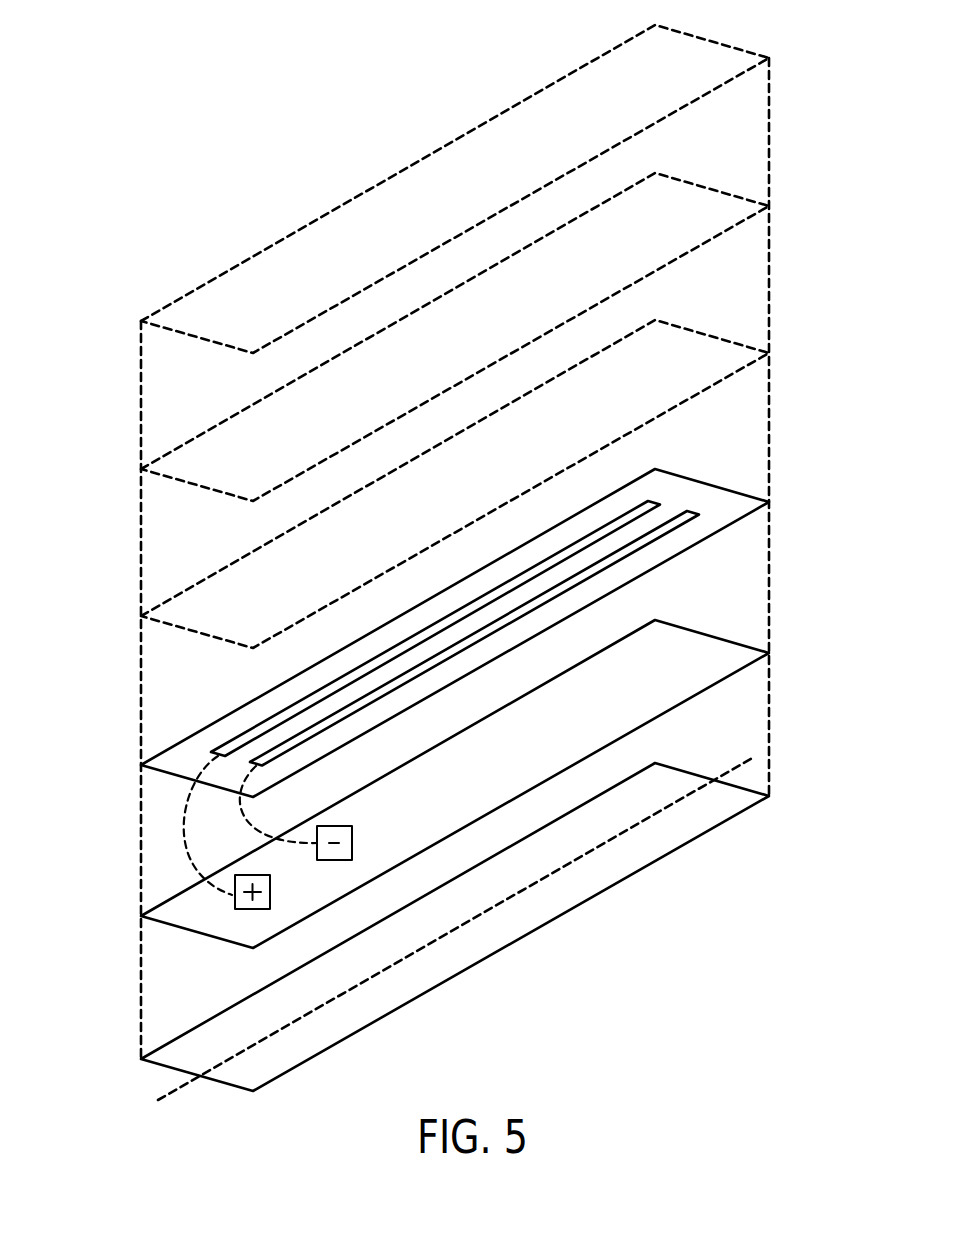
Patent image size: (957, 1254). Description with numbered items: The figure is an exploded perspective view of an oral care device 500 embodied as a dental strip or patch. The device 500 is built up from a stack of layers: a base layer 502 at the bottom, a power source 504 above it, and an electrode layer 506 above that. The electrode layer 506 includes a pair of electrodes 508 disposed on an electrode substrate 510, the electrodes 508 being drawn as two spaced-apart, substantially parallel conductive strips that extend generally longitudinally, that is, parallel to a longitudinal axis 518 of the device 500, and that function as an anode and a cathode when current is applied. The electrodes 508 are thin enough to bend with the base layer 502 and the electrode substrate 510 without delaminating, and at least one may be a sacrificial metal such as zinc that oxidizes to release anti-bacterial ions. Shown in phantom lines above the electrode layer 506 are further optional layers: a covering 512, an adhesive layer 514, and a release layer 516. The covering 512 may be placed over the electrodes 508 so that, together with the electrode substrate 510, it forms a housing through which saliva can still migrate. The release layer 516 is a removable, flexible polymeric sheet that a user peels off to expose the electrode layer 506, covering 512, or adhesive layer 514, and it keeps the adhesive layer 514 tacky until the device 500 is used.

The oral care device 500 is at (103, 247).
The base layer 502 is at (716, 806).
The power source 504 is at (716, 664).
The electrode layer 506 is at (716, 513).
The electrodes 508 is at (270, 752).
The electrode substrate 510 is at (178, 763).
The covering 512 is at (716, 363).
The adhesive layer 514 is at (716, 216).
The release layer 516 is at (716, 68).
The longitudinal axis 518 is at (179, 1087).